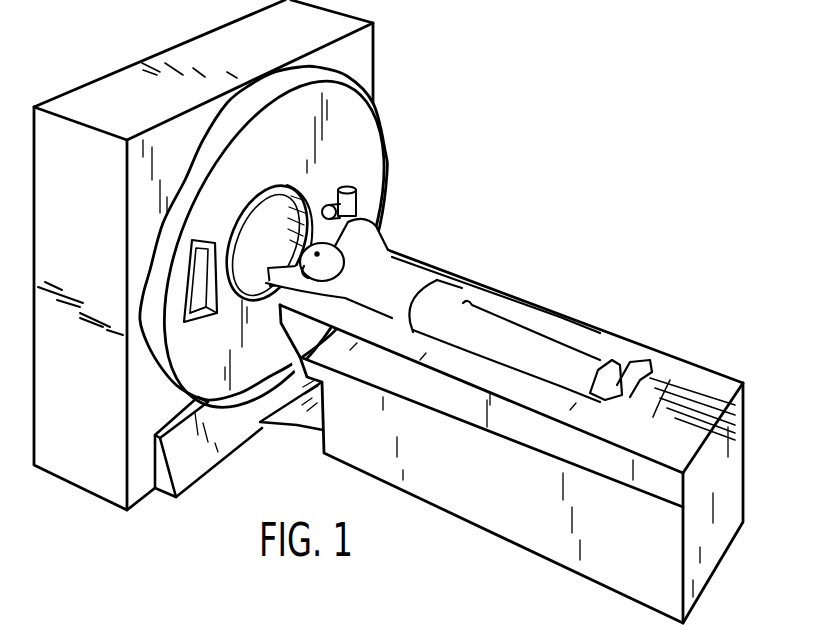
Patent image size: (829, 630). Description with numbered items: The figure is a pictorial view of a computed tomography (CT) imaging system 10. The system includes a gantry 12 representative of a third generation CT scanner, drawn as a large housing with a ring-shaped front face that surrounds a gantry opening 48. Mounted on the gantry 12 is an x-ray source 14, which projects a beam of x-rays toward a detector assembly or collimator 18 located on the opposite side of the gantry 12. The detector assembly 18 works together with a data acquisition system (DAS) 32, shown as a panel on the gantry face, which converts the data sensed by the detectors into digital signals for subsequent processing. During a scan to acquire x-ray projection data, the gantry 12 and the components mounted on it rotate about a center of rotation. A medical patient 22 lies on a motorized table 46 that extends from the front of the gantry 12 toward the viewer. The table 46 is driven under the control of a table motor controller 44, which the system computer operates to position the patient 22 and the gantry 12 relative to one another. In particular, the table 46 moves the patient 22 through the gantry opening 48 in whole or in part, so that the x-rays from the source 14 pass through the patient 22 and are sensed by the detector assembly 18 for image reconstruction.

The computed tomography (CT) imaging system 10 is at (388, 315).
The gantry 12 is at (369, 154).
The x-ray source 14 is at (355, 206).
The detector assembly or collimator 18 is at (203, 326).
The medical patient 22 is at (412, 273).
The data acquisition system (DAS) 32 is at (208, 247).
The table motor controller 44 is at (305, 505).
The motorized table 46 is at (497, 517).
The gantry opening 48 is at (262, 231).